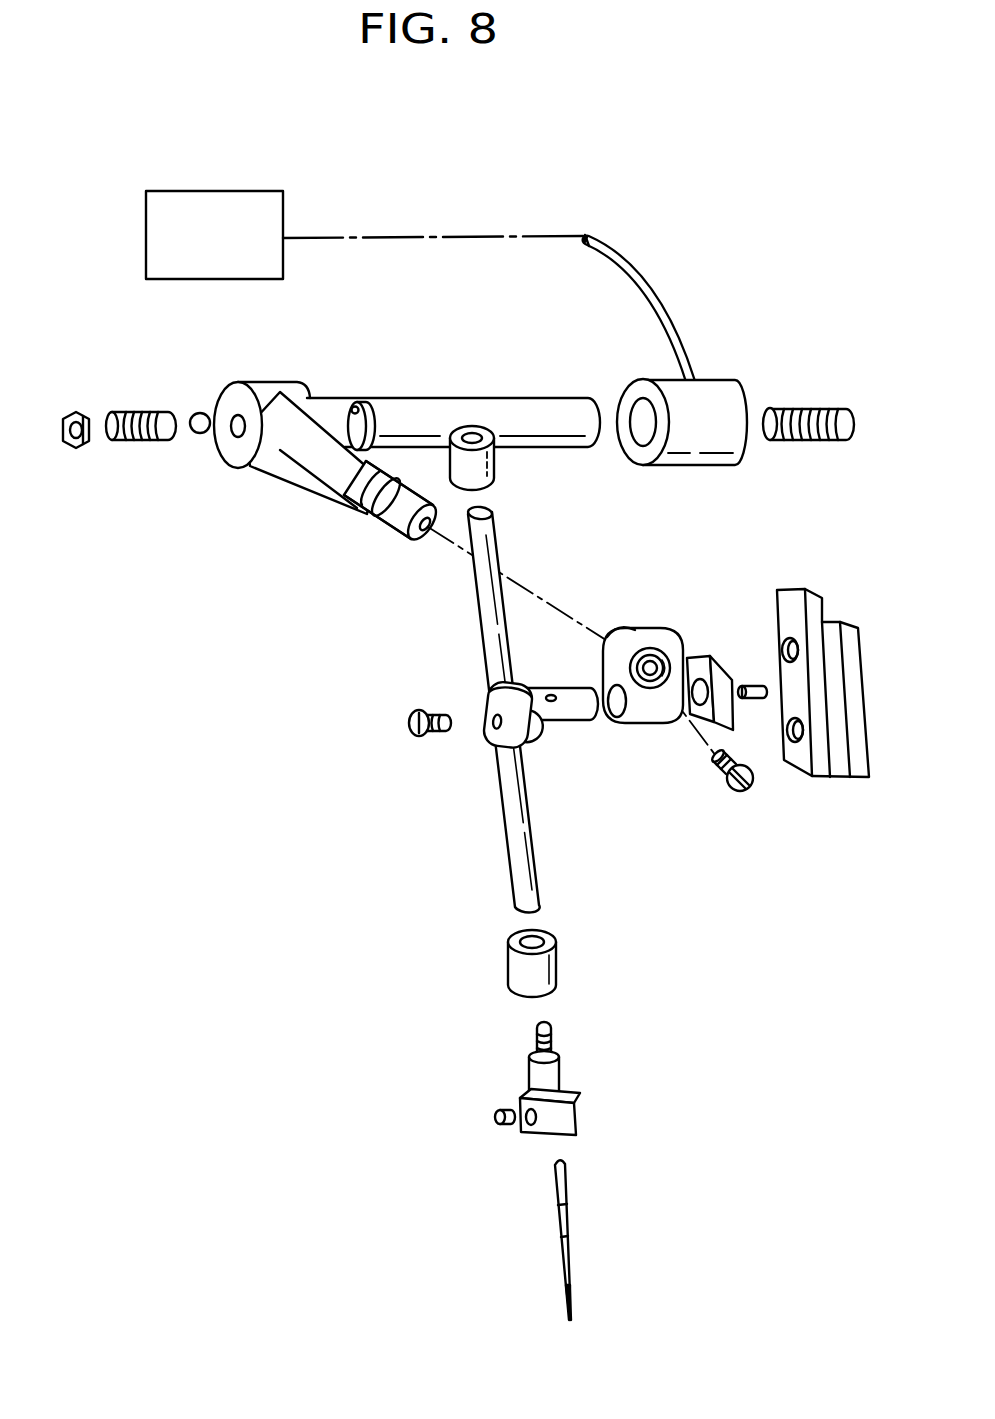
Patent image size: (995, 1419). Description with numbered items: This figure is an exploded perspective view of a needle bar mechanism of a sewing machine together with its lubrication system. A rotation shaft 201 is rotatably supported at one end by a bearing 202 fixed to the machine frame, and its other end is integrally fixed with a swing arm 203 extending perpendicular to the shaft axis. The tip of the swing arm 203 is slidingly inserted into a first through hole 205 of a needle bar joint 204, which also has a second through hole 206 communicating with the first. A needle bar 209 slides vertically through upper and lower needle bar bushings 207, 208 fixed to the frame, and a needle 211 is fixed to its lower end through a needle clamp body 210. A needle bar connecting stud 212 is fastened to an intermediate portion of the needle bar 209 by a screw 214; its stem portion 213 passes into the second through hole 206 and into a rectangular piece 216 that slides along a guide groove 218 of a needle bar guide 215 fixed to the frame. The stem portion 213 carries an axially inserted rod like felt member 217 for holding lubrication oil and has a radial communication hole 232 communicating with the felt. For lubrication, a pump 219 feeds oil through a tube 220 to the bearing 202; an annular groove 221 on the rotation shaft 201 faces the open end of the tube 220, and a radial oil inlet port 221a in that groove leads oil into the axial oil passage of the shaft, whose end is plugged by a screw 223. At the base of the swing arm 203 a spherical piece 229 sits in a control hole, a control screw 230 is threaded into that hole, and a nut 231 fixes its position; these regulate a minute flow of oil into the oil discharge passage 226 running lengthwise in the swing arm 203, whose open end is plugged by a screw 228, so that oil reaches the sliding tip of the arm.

The rotation shaft 201 is at (500, 413).
The bearing 202 is at (725, 408).
The swing arm 203 is at (324, 492).
The needle bar joint 204 is at (641, 712).
The first through hole 205 is at (650, 665).
The second through hole 206 is at (616, 713).
The upper needle bar bushing 207 is at (500, 463).
The lower needle bar bushing 208 is at (540, 973).
The needle bar 209 is at (493, 634).
The needle clamp body 210 is at (550, 1087).
The needle 211 is at (565, 1198).
The needle bar connecting stud 212 is at (503, 750).
The stem portion 213 is at (560, 709).
The screw 214 is at (410, 718).
The needle bar guide 215 is at (850, 753).
The rectangular piece 216 is at (705, 658).
The rod like felt member 217 is at (748, 686).
The guide groove 218 is at (797, 603).
The pump 219 is at (262, 215).
The tube 220 is at (656, 308).
The annular groove 221 is at (371, 399).
The radial oil inlet port 221a is at (352, 405).
The screw 223 is at (817, 410).
The oil discharge passage 226 is at (423, 538).
The screw 228 is at (738, 788).
The spherical piece 229 is at (200, 412).
The control screw 230 is at (146, 410).
The nut 231 is at (69, 410).
The radial communication hole 232 is at (552, 694).